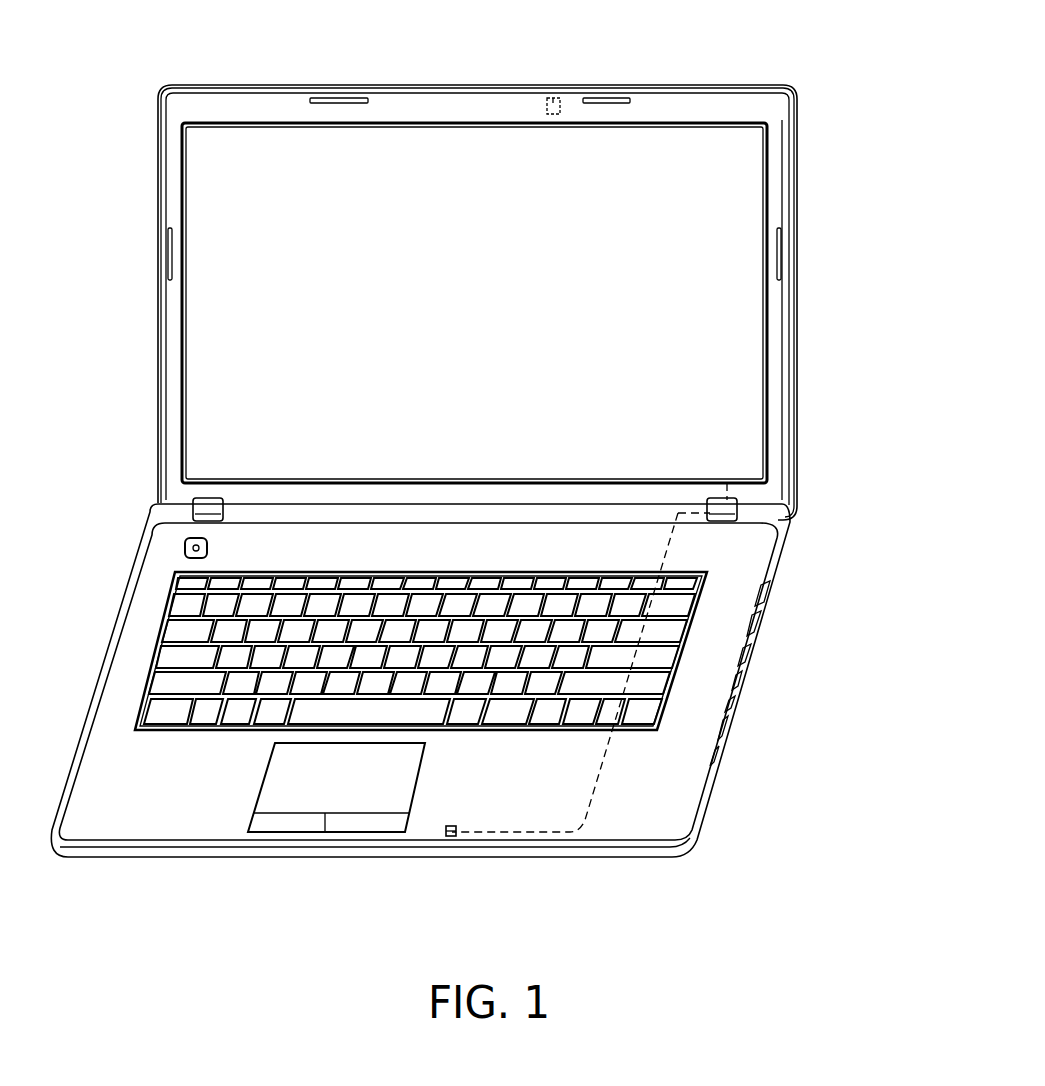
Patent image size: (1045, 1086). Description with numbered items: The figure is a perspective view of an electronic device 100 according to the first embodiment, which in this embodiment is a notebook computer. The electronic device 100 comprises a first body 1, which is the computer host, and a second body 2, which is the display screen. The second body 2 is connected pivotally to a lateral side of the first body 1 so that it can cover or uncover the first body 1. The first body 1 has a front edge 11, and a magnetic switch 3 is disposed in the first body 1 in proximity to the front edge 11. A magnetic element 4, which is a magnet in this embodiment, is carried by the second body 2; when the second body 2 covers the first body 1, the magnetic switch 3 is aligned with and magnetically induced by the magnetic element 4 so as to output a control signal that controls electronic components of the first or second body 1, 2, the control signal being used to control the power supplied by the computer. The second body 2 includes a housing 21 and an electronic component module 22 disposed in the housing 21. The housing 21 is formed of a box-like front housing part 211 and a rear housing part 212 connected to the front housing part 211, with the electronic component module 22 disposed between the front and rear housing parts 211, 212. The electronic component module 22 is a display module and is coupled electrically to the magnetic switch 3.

The electronic device 100 is at (475, 463).
The first body 1 is at (427, 704).
The front edge 11 is at (525, 860).
The second body 2 is at (529, 260).
The housing 21 is at (529, 302).
The front housing part 211 is at (777, 425).
The rear housing part 212 is at (797, 355).
The electronic component module 22 is at (678, 165).
The magnetic switch 3 is at (458, 824).
The magnetic element 4 is at (551, 96).